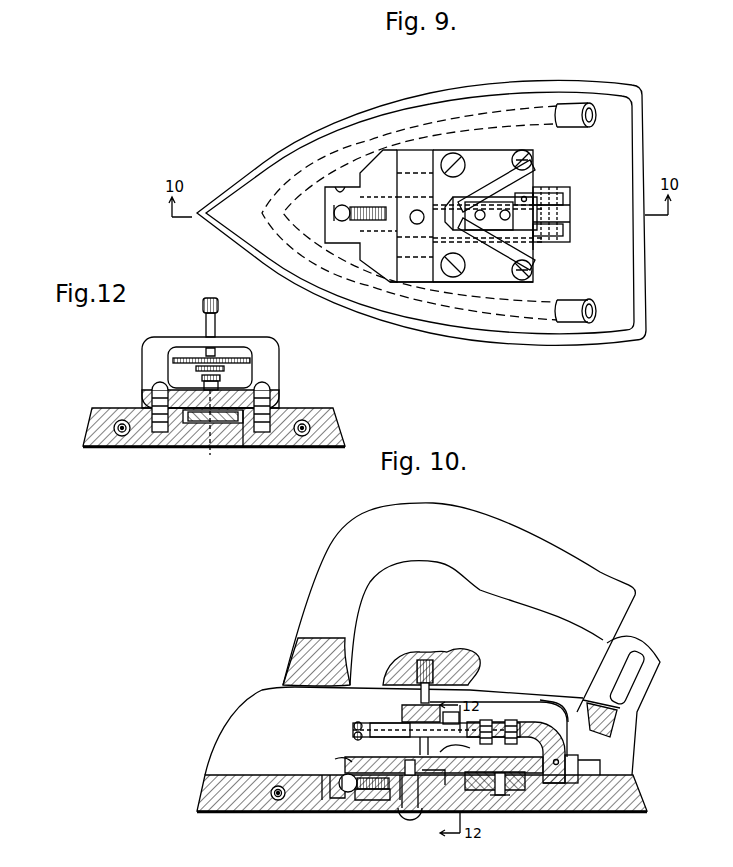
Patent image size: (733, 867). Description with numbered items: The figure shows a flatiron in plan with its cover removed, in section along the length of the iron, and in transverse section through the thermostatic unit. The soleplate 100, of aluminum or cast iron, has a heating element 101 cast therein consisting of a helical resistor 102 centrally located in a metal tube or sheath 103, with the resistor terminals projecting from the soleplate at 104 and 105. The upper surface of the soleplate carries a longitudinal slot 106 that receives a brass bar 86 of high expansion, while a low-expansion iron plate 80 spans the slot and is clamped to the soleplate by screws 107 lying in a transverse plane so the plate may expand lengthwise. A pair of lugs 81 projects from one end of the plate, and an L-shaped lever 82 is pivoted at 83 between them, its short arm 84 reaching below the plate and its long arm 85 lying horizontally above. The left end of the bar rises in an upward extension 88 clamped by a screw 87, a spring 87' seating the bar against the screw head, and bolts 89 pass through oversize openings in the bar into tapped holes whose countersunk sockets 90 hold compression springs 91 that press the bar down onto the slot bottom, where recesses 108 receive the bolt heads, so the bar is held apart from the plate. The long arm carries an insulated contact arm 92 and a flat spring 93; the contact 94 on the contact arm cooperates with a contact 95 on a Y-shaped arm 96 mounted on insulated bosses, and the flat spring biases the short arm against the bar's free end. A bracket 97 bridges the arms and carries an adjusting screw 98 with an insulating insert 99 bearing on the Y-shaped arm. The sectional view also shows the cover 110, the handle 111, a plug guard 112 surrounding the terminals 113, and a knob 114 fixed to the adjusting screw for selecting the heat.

In FIG. 9, the plate 80 is at (470, 284).
In FIG. 12, the plate 80 is at (282, 398).
In FIG. 10, the plate 80 is at (497, 794).
In FIG. 9, the lugs 81 is at (565, 199).
In FIG. 10, the lugs 81 is at (578, 762).
In FIG. 9, the L-shaped lever 82 is at (572, 214).
In FIG. 10, the L-shaped lever 82 is at (545, 714).
In FIG. 9, the pivot 83 is at (553, 197).
In FIG. 10, the pivot 83 is at (560, 750).
In FIG. 10, the short arm 84 is at (556, 787).
In FIG. 9, the long arm 85 is at (522, 218).
In FIG. 10, the long arm 85 is at (485, 730).
In FIG. 12, the bar 86 is at (196, 426).
In FIG. 10, the bar 86 is at (376, 801).
In FIG. 9, the screw 87 is at (346, 214).
In FIG. 10, the screw 87 is at (340, 775).
In FIG. 10, the spring 87' is at (335, 752).
In FIG. 10, the upward extension 88 is at (336, 801).
In FIG. 10, the bolts 89 is at (410, 815).
In FIG. 10, the sockets 90 is at (444, 790).
In FIG. 10, the compression springs 91 is at (412, 778).
In FIG. 12, the contact arm 92 is at (220, 378).
In FIG. 10, the contact arm 92 is at (378, 723).
In FIG. 12, the flat spring 93 is at (200, 378).
In FIG. 10, the flat spring 93 is at (420, 750).
In FIG. 10, the contact 94 is at (354, 736).
In FIG. 10, the contact 95 is at (354, 726).
In FIG. 9, the Y-shaped arm 96 is at (475, 178).
In FIG. 12, the Y-shaped arm 96 is at (240, 356).
In FIG. 10, the Y-shaped arm 96 is at (377, 735).
In FIG. 9, the bracket 97 is at (533, 158).
In FIG. 12, the bracket 97 is at (274, 357).
In FIG. 10, the bracket 97 is at (447, 700).
In FIG. 12, the adjusting screw 98 is at (203, 308).
In FIG. 10, the adjusting screw 98 is at (418, 677).
In FIG. 10, the insert 99 is at (451, 719).
In FIG. 9, the soleplate 100 is at (260, 248).
In FIG. 12, the soleplate 100 is at (90, 442).
In FIG. 10, the soleplate 100 is at (205, 813).
In FIG. 12, the heating element 101 is at (124, 420).
In FIG. 10, the heating element 101 is at (290, 812).
In FIG. 12, the helical resistor 102 is at (115, 447).
In FIG. 10, the helical resistor 102 is at (262, 812).
In FIG. 12, the metal tube or sheath 103 is at (127, 447).
In FIG. 10, the metal tube or sheath 103 is at (274, 786).
In FIG. 9, the terminal 104 is at (584, 104).
In FIG. 10, the terminal 104 is at (594, 766).
In FIG. 9, the terminal 105 is at (590, 323).
In FIG. 9, the longitudinal slot 106 is at (341, 190).
In FIG. 12, the longitudinal slot 106 is at (246, 426).
In FIG. 10, the longitudinal slot 106 is at (330, 798).
In FIG. 9, the screws 107 is at (450, 150).
In FIG. 12, the screws 107 is at (150, 394).
In FIG. 10, the screws 107 is at (482, 720).
In FIG. 12, the recesses 108 is at (214, 436).
In FIG. 10, the recesses 108 is at (502, 796).
In FIG. 10, the cover 110 is at (252, 702).
In FIG. 10, the handle 111 is at (530, 537).
In FIG. 10, the plug guard 112 is at (625, 705).
In FIG. 10, the terminals 113 is at (632, 672).
In FIG. 10, the knob 114 is at (447, 656).